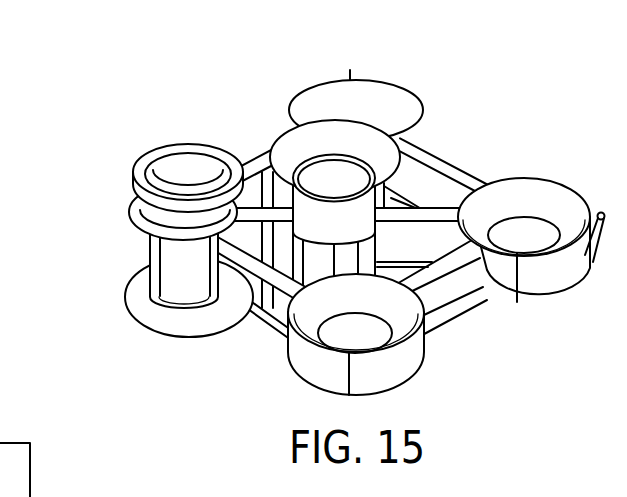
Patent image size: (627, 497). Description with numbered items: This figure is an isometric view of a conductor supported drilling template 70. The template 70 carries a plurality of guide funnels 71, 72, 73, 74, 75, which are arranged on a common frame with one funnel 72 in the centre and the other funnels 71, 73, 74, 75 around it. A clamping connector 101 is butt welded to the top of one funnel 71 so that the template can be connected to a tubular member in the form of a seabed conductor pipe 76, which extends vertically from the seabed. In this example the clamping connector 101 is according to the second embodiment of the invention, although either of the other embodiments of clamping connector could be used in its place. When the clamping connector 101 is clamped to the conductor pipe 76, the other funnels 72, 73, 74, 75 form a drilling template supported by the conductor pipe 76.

The conductor supported drilling template 70 is at (211, 114).
The guide funnel 71 is at (147, 247).
The guide funnel 72 is at (287, 137).
The guide funnel 73 is at (342, 83).
The guide funnel 74 is at (553, 180).
The guide funnel 75 is at (425, 337).
The seabed conductor pipe 76 is at (23, 483).
The clamping connector 101 is at (131, 175).